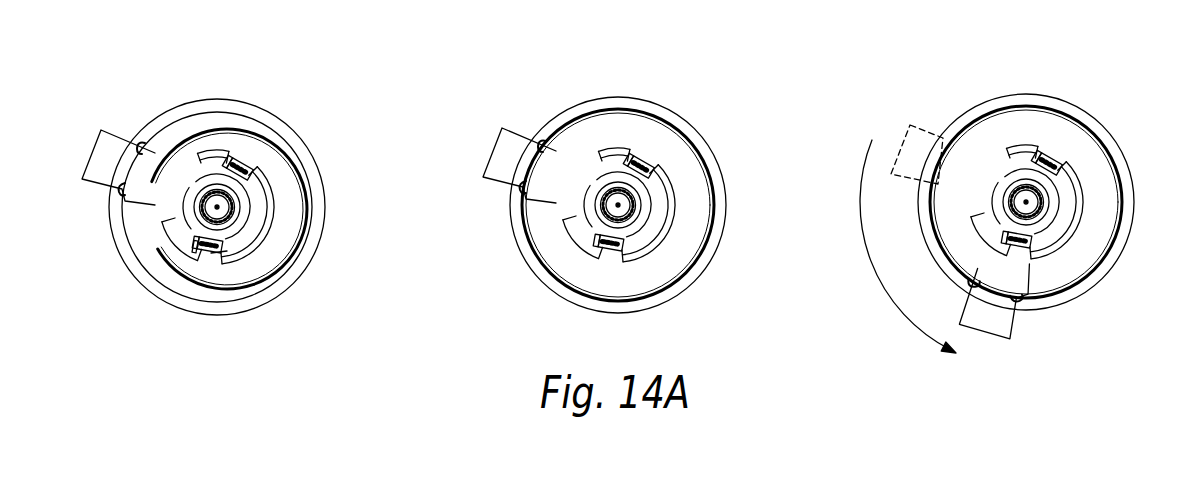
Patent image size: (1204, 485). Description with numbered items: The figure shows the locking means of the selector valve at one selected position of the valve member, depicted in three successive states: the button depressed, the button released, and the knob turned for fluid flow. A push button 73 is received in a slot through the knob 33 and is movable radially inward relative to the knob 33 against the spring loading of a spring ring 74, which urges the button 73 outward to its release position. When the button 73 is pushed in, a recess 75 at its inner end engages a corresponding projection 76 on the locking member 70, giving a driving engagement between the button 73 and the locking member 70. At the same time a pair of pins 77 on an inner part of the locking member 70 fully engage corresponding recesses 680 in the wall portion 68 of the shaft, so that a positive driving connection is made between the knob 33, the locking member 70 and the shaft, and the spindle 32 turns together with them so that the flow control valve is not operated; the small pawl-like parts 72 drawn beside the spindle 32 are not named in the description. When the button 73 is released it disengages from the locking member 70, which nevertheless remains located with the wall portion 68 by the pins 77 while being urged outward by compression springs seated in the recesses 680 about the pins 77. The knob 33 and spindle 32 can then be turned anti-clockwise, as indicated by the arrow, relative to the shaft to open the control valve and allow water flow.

The spindle 32 is at (686, 217).
The knob 33 is at (621, 183).
The wall portion 68 is at (671, 239).
The recesses 680 is at (241, 302).
The locking member 70 is at (617, 157).
The pawl 72 is at (627, 192).
The push button 73 is at (542, 237).
The spring ring 74 is at (244, 185).
The recess 75 is at (570, 242).
The projection 76 is at (545, 188).
The pins 77 is at (174, 293).